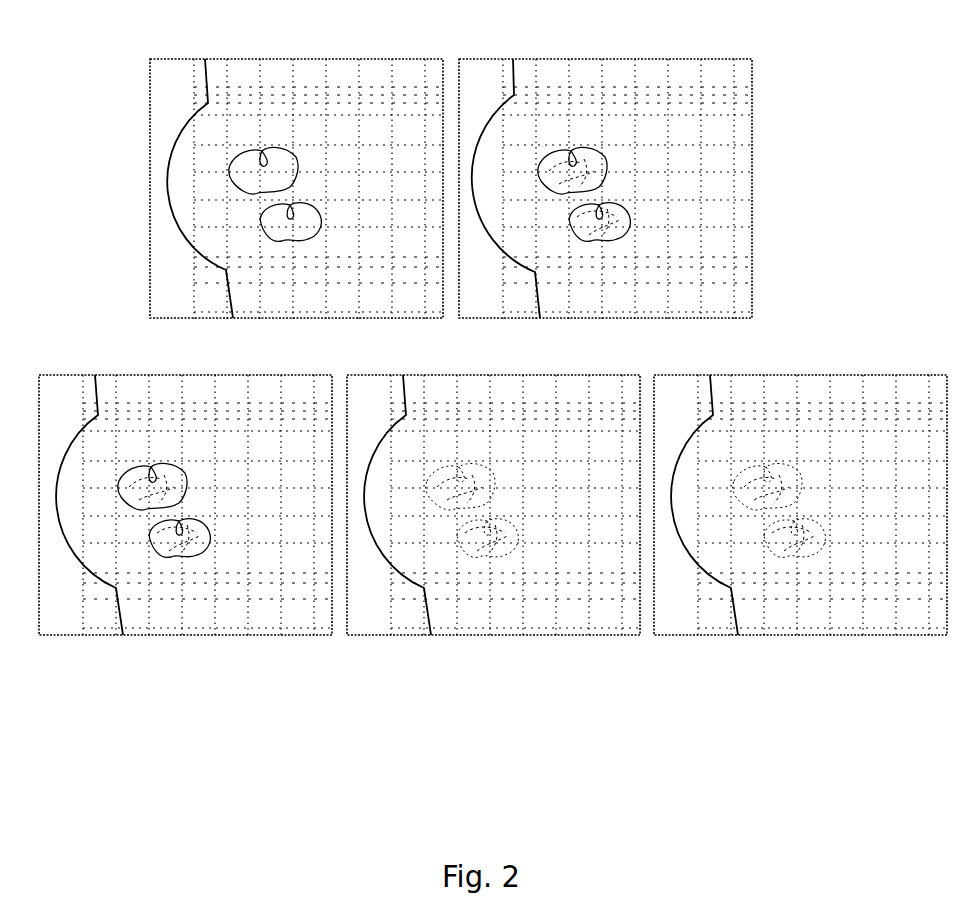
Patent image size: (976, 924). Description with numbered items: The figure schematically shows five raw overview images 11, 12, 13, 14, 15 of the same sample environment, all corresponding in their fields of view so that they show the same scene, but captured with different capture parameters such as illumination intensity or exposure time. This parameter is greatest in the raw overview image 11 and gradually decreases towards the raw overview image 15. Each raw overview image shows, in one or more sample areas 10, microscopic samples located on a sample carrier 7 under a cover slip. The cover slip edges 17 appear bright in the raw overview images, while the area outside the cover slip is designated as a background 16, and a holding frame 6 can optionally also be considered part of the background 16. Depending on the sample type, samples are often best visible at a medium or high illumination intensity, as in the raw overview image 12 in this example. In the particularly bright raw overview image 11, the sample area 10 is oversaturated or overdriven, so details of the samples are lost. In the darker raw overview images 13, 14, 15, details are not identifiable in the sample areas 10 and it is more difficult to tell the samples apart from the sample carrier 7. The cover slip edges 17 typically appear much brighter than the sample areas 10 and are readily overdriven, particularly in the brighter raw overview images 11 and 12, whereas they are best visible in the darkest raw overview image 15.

The holding frame 6 is at (197, 275).
The sample carrier 7 is at (215, 218).
The sample area 10 is at (242, 167).
The raw overview image 11 is at (312, 50).
The raw overview image 12 is at (695, 52).
The raw overview image 13 is at (170, 642).
The raw overview image 14 is at (473, 639).
The raw overview image 15 is at (798, 649).
The background 16 is at (728, 65).
The cover slip edges 17 is at (220, 104).